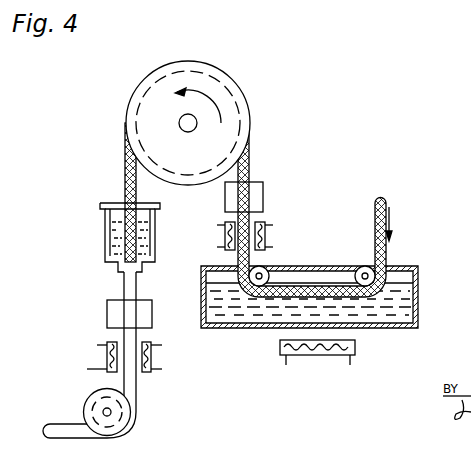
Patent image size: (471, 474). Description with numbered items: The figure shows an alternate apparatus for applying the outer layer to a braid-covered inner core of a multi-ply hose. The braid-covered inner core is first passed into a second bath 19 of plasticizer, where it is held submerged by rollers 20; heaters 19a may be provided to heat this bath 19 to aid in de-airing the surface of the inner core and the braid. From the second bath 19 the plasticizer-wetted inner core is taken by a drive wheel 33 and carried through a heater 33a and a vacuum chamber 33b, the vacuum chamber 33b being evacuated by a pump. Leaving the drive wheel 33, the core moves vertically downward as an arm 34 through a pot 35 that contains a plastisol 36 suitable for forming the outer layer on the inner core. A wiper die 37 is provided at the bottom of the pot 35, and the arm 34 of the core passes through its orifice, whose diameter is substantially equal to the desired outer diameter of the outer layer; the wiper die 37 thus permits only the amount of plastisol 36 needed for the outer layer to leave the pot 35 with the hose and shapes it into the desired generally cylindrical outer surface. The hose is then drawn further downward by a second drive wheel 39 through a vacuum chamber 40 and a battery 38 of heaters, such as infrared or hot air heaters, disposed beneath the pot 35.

The second bath 19 is at (275, 312).
The heaters 19a is at (321, 356).
The rollers 20 is at (267, 268).
The drive wheel 33 is at (240, 96).
The heater 33a is at (265, 233).
The vacuum chamber 33b is at (258, 196).
The arm 34 is at (125, 170).
The pot 35 is at (110, 238).
The plastisol 36 is at (152, 238).
The wiper die 37 is at (120, 282).
The battery of heaters 38 is at (152, 355).
The drive wheel 39 is at (123, 417).
The vacuum chamber 40 is at (108, 315).